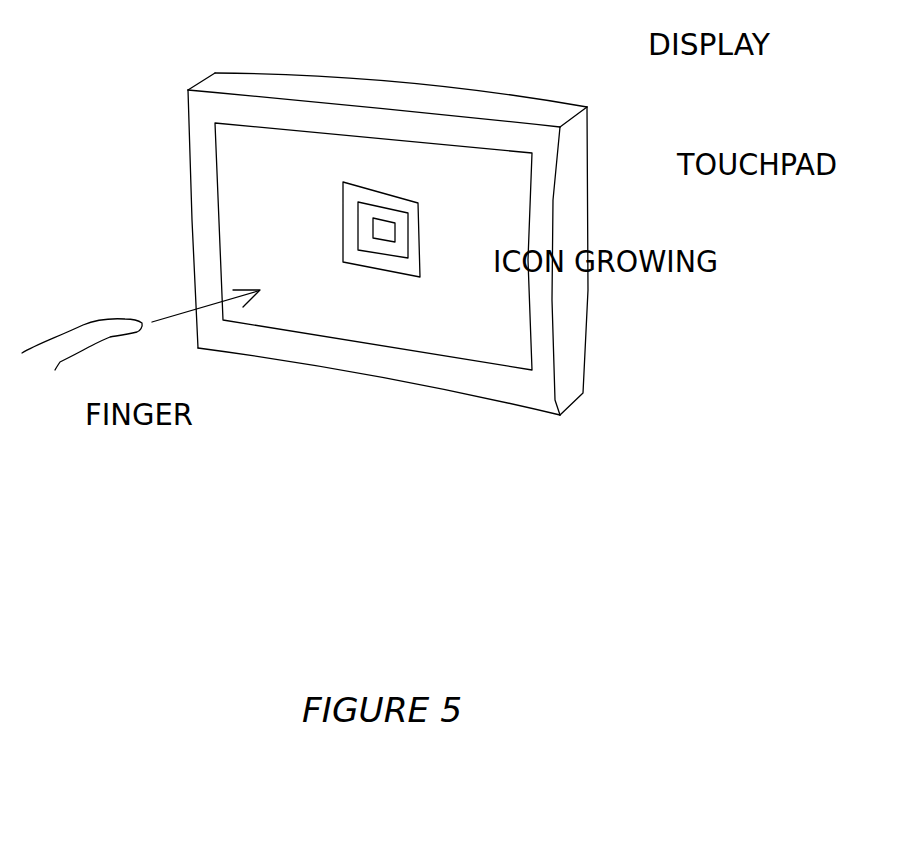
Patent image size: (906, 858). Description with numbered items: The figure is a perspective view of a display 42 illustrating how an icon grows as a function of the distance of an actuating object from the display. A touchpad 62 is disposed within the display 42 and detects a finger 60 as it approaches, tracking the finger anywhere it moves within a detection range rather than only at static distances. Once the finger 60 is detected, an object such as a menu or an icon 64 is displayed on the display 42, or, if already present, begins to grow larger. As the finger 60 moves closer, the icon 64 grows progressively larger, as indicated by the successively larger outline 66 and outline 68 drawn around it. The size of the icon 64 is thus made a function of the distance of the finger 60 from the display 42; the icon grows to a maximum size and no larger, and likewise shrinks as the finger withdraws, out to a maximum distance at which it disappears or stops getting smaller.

The display 42 is at (542, 92).
The touchpad 62 is at (545, 180).
The icon 64 is at (390, 230).
The outline 66 is at (407, 250).
The outline 68 is at (420, 270).
The finger 60 is at (93, 355).